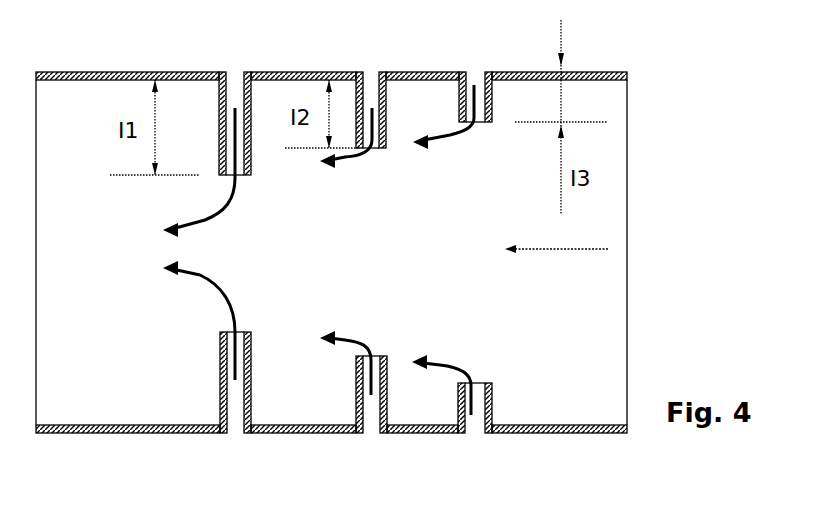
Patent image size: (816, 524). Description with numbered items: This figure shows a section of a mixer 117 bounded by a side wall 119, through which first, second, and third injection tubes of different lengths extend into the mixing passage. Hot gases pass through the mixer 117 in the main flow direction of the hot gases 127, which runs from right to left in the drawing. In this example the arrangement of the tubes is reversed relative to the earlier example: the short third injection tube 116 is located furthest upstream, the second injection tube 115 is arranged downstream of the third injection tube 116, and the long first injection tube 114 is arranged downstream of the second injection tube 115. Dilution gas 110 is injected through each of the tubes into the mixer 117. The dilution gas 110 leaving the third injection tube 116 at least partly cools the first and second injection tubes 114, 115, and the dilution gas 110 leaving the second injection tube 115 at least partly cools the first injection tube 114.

The dilution gas 110 is at (473, 406).
The first injection tube 114 is at (231, 87).
The second injection tube 115 is at (371, 87).
The third injection tube 116 is at (474, 87).
The mixer 117 is at (373, 263).
The side wall 119 is at (110, 428).
The main flow direction of the hot gases 127 is at (556, 261).